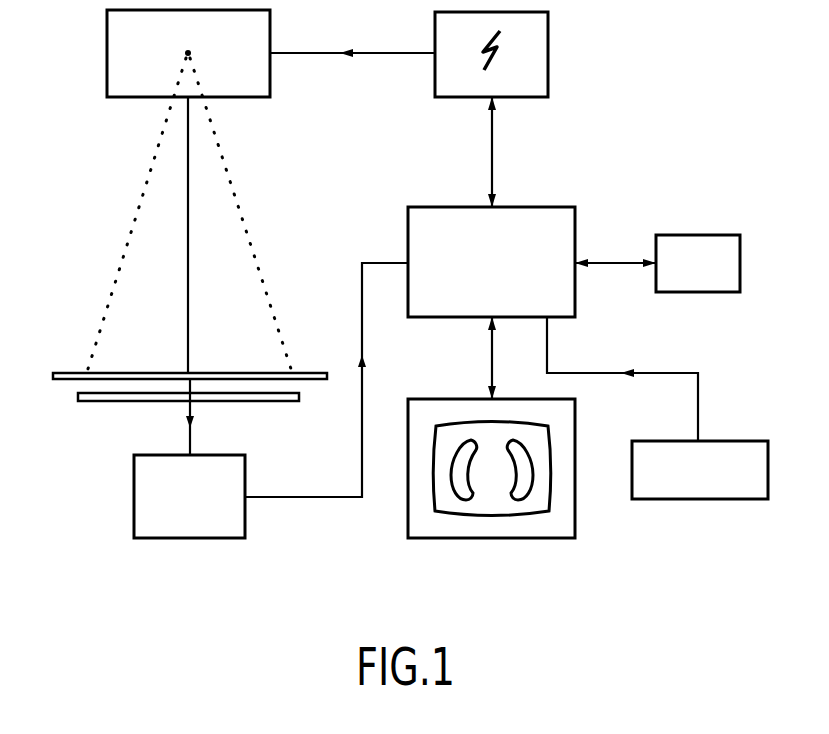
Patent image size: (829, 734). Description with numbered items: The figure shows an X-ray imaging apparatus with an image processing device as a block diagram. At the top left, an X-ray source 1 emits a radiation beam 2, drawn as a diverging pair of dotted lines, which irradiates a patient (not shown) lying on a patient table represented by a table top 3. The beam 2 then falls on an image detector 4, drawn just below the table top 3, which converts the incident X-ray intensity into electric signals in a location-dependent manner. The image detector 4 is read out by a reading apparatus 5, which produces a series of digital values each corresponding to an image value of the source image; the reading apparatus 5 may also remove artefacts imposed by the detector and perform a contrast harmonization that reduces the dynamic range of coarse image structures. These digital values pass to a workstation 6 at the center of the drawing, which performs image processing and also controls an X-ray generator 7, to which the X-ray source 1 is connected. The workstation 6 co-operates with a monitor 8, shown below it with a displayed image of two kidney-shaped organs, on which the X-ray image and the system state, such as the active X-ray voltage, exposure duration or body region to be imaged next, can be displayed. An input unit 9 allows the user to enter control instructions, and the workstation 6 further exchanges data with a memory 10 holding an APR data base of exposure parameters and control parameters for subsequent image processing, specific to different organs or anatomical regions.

The X-ray source 1 is at (107, 42).
The radiation beam 2 is at (248, 240).
The table top 3 is at (316, 372).
The image detector 4 is at (268, 398).
The reading apparatus 5 is at (245, 520).
The workstation 6 is at (527, 220).
The X-ray generator 7 is at (548, 77).
The monitor 8 is at (523, 538).
The input unit 9 is at (722, 440).
The memory 10 is at (678, 233).